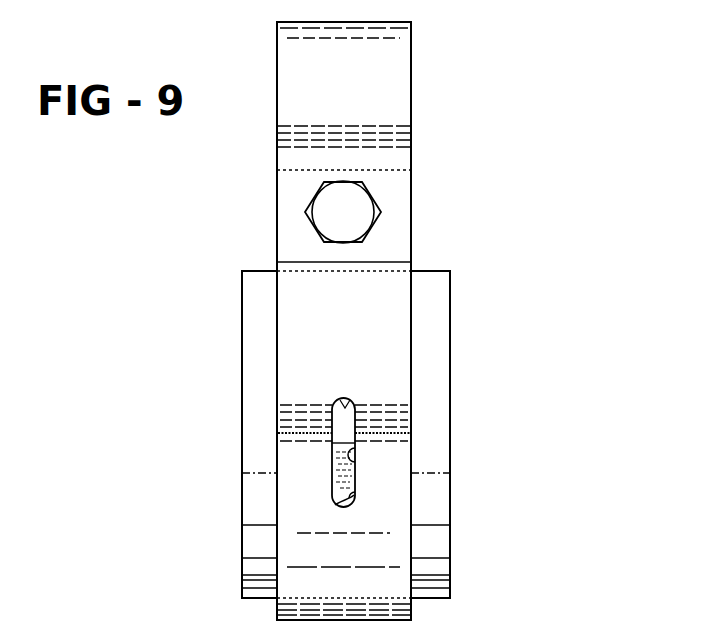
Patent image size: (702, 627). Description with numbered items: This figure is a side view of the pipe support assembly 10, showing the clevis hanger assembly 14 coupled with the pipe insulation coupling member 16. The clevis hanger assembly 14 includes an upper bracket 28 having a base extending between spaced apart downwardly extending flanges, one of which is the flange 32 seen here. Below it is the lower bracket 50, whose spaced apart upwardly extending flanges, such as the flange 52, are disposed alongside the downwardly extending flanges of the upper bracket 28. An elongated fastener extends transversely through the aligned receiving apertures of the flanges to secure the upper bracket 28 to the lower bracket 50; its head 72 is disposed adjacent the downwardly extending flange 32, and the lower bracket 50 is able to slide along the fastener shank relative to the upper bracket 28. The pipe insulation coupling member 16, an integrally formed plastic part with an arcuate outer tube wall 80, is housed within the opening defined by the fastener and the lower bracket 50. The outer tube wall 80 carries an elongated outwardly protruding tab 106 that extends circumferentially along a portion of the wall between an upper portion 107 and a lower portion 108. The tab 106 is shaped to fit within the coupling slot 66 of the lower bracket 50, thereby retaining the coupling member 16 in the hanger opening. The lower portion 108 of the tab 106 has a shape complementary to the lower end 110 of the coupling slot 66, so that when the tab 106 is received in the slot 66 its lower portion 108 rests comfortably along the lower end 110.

The pipe support assembly 10 is at (192, 583).
The clevis hanger assembly 14 is at (415, 72).
The pipe insulation coupling member 16 is at (425, 271).
The upper bracket 28 is at (277, 52).
The downwardly extending flange 32 is at (277, 228).
The lower bracket 50 is at (411, 398).
The upwardly extending flange 52 is at (277, 357).
The coupling slot 66 is at (345, 404).
The head 72 is at (382, 203).
The outer tube wall 80 is at (450, 328).
The outwardly protruding tab 106 is at (357, 462).
The upper portion 107 is at (340, 442).
The lower portion 108 is at (357, 493).
The lower end 110 is at (338, 497).